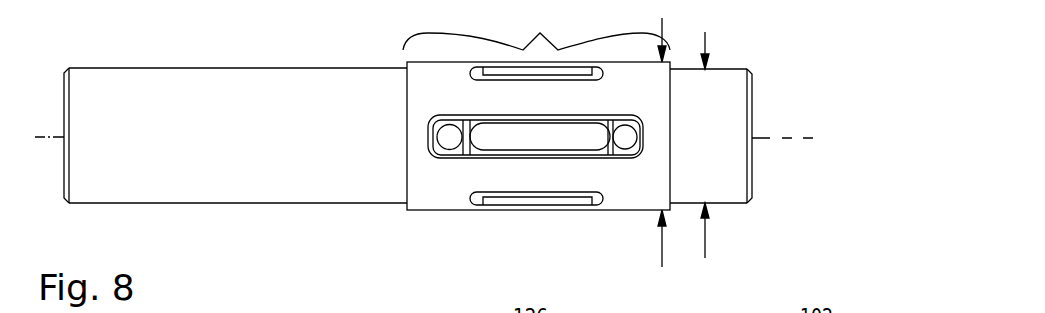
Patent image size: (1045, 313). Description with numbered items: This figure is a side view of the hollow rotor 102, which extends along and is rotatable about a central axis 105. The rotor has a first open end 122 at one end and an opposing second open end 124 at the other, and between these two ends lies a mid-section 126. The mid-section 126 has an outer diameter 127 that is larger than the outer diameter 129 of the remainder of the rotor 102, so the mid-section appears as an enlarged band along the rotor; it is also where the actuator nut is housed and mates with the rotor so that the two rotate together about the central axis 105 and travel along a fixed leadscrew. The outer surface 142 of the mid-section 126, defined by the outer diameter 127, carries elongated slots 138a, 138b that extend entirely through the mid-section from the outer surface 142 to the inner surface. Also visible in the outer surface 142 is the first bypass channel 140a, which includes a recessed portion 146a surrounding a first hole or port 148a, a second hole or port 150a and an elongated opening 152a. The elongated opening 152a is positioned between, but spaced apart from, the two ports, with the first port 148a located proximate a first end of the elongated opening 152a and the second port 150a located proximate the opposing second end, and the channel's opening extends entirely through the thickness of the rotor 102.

The hollow rotor 102 is at (733, 40).
The central axis 105 is at (771, 139).
The first open end 122 is at (753, 91).
The second open end 124 is at (63, 155).
The mid-section 126 is at (536, 25).
The outer diameter 127 is at (656, 158).
The outer diameter 129 is at (705, 163).
The elongated slot 138a is at (547, 82).
The elongated slot 138b is at (548, 205).
The first bypass channel 140a is at (598, 162).
The outer surface 142 is at (645, 104).
The recessed portion 146a is at (445, 156).
The first hole or port 148a is at (437, 116).
The second hole or port 150a is at (636, 116).
The elongated opening 152a is at (553, 150).